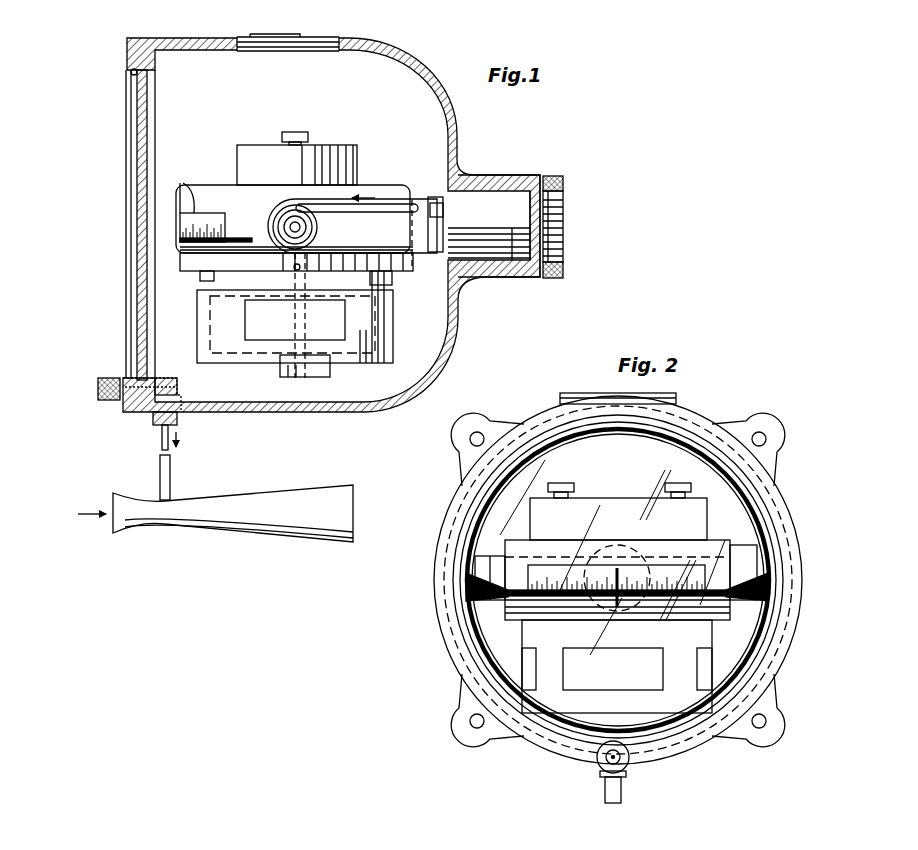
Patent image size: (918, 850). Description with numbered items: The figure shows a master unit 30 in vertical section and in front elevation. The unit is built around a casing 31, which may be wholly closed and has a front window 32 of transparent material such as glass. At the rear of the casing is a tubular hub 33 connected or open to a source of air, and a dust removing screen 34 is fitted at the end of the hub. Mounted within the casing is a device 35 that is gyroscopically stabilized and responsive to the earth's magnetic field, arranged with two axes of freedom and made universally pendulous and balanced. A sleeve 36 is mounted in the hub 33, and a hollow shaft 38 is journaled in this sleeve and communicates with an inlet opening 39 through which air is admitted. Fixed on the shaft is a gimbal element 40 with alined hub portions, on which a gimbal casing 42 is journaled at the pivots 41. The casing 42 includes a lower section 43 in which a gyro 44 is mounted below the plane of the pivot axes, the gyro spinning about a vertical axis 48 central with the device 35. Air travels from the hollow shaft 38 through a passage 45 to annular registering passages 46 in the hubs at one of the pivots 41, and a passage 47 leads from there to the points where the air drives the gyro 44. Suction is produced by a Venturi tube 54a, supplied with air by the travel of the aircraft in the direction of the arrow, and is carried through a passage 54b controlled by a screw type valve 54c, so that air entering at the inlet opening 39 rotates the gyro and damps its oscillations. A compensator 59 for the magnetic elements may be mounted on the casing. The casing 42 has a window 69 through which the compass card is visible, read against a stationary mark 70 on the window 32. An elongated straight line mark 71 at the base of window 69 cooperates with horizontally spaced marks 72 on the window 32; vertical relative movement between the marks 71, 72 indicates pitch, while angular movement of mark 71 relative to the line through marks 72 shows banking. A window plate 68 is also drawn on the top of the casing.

In FIG. 1, the master unit 30 is at (101, 43).
In FIG. 1, the casing 31 is at (432, 72).
In FIG. 2, the casing 31 is at (780, 500).
In FIG. 1, the front window 32 is at (137, 128).
In FIG. 2, the front window 32 is at (502, 515).
In FIG. 1, the hub 33 is at (503, 175).
In FIG. 1, the screen 34 is at (545, 249).
In FIG. 1, the gyroscopically stabilized device 35 is at (220, 153).
In FIG. 1, the sleeve 36 is at (512, 246).
In FIG. 2, the sleeve 36 is at (633, 552).
In FIG. 1, the hollow shaft 38 is at (460, 174).
In FIG. 1, the inlet opening 39 is at (545, 224).
In FIG. 1, the gimbal element 40 is at (392, 236).
In FIG. 2, the gimbal element 40 is at (475, 562).
In FIG. 1, the pivots 41 is at (301, 228).
In FIG. 1, the gimbal casing 42 is at (222, 192).
In FIG. 2, the gimbal casing 42 is at (716, 540).
In FIG. 1, the lower section 43 is at (206, 288).
In FIG. 2, the lower section 43 is at (710, 630).
In FIG. 1, the gyro 44 is at (363, 350).
In FIG. 1, the passage 45 is at (416, 201).
In FIG. 1, the annular registering passages 46 is at (318, 241).
In FIG. 1, the passage 47 is at (288, 268).
In FIG. 1, the vertical axis 48 is at (300, 354).
In FIG. 1, the Venturi tube 54a is at (241, 502).
In FIG. 1, the passage 54b is at (157, 414).
In FIG. 1, the screw type valve 54c is at (172, 396).
In FIG. 2, the screw type valve 54c is at (609, 760).
In FIG. 1, the compensator 59 is at (348, 142).
In FIG. 2, the compensator 59 is at (622, 498).
In FIG. 1, the window plate 68 is at (300, 52).
In FIG. 2, the window plate 68 is at (677, 399).
In FIG. 1, the window 69 is at (184, 205).
In FIG. 1, the stationary mark 70 is at (180, 240).
In FIG. 2, the stationary mark 70 is at (623, 604).
In FIG. 1, the straight line mark 71 is at (225, 236).
In FIG. 2, the straight line mark 71 is at (693, 603).
In FIG. 2, the horizontally spaced marks 72 is at (476, 632).